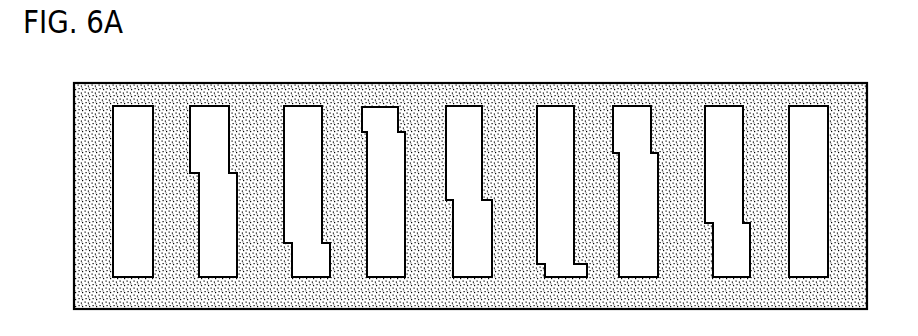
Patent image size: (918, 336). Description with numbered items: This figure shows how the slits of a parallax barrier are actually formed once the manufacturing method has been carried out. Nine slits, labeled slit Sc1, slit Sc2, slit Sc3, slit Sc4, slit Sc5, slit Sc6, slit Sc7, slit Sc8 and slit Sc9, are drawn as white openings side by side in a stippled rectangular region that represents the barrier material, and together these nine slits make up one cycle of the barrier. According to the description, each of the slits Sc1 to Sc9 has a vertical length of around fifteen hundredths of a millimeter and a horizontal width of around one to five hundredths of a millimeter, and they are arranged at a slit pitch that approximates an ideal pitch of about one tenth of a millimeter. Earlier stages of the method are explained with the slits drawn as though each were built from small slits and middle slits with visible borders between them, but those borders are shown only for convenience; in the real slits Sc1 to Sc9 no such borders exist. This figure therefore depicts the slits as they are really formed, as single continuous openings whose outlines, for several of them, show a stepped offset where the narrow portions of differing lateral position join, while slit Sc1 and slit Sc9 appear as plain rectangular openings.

The slit Sc1 is at (133, 164).
The slit Sc2 is at (213, 164).
The slit Sc3 is at (307, 164).
The slit Sc4 is at (383, 164).
The slit Sc5 is at (469, 164).
The slit Sc6 is at (562, 164).
The slit Sc7 is at (635, 164).
The slit Sc8 is at (727, 164).
The slit Sc9 is at (808, 164).